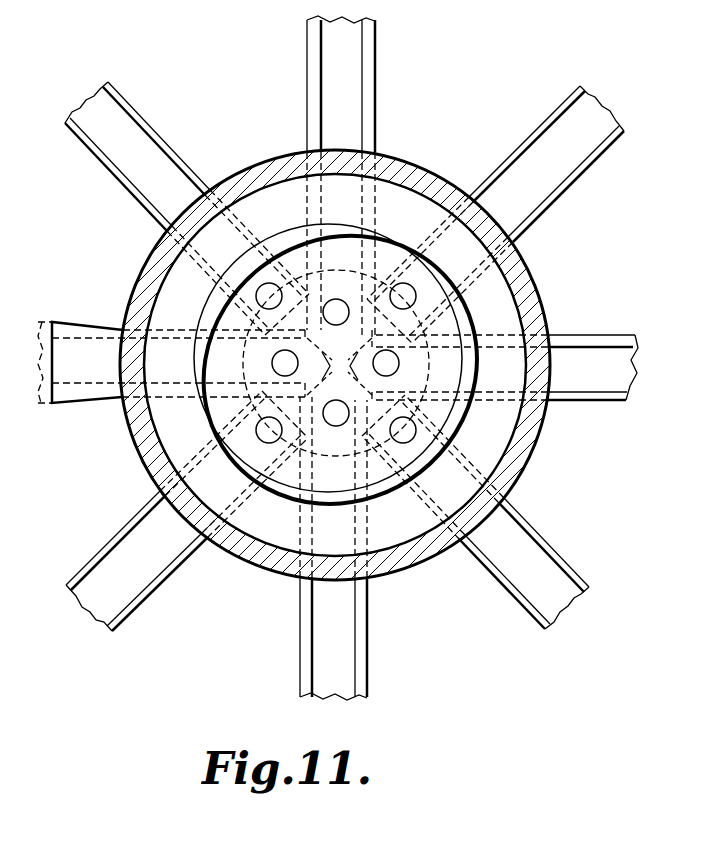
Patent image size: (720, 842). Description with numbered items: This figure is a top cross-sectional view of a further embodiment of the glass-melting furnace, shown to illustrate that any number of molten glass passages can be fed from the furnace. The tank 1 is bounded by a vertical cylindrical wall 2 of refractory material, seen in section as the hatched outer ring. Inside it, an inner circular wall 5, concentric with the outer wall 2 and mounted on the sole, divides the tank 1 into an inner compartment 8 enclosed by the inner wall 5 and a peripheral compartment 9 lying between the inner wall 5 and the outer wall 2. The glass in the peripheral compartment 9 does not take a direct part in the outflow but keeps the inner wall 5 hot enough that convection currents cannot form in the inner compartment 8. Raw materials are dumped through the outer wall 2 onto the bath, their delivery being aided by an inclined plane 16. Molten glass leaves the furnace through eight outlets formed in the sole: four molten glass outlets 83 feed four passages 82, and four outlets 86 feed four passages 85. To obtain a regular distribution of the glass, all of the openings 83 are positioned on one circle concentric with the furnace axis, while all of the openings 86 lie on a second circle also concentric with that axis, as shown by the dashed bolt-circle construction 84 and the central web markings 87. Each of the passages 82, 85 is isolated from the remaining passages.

The tank 1 is at (537, 283).
The vertical cylindrical wall 2 is at (542, 302).
The inner circular wall 5 is at (468, 322).
The inner compartment 8 is at (366, 300).
The peripheral compartment 9 is at (410, 224).
The inclined plane 16 is at (80, 323).
The passages 82 is at (147, 165).
The molten glass outlets 83 is at (269, 296).
The bolt circle 84 is at (319, 268).
The passages 85 is at (350, 106).
The outlets 86 is at (336, 312).
The central ribs 87 is at (287, 340).